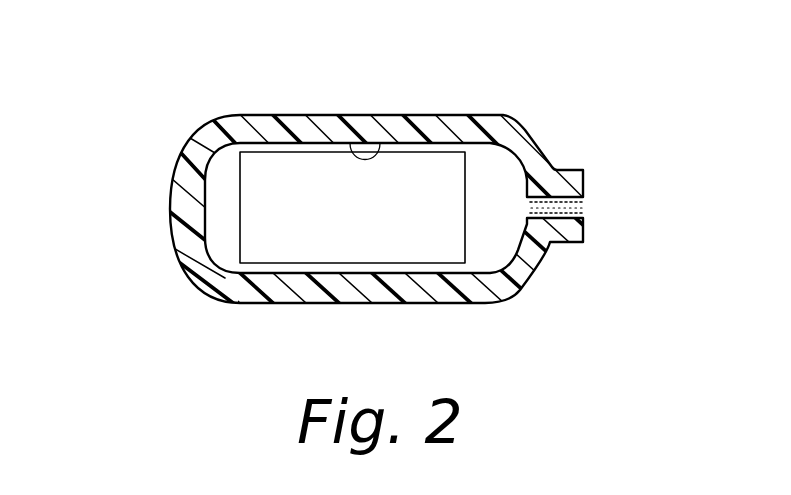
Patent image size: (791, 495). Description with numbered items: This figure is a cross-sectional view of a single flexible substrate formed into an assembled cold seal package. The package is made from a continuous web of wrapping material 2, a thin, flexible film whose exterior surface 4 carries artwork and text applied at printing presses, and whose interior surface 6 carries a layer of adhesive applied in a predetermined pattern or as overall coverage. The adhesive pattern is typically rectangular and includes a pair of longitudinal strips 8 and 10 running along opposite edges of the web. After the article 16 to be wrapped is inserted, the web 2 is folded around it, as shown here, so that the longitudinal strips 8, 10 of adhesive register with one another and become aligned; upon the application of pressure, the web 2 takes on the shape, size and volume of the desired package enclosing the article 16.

The web of wrapping material 2 is at (380, 193).
The exterior surface 4 is at (293, 116).
The interior surface 6 is at (385, 142).
The longitudinal strip 8 is at (583, 198).
The longitudinal strip 10 is at (583, 213).
The article 16 is at (296, 233).